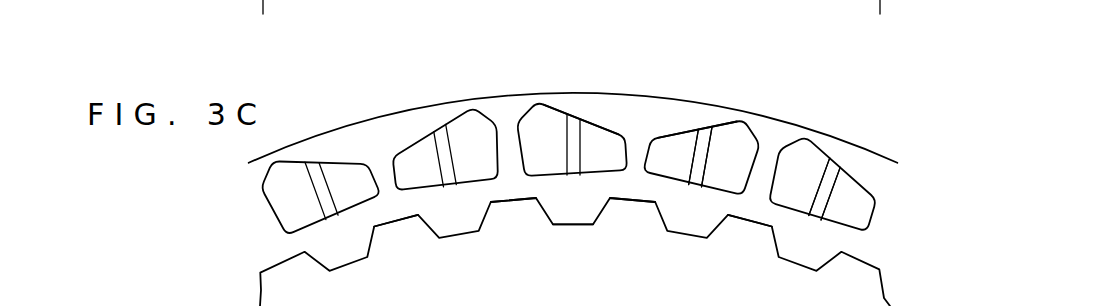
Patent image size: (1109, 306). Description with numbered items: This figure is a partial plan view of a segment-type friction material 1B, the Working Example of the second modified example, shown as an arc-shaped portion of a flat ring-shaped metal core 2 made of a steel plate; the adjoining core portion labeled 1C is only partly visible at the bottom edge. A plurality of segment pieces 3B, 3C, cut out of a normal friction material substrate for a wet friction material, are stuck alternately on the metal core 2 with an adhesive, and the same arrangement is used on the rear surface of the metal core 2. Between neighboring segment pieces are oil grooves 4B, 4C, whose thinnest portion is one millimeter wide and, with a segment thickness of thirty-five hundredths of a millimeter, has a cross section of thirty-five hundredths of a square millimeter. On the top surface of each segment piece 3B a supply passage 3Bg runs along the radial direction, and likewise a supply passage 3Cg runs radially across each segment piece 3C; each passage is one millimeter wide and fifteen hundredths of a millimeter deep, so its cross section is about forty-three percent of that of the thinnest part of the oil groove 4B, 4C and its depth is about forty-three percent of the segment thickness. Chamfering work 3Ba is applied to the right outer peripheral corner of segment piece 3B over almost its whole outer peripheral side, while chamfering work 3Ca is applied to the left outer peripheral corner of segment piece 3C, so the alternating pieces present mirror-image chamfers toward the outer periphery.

The segment-type friction material 1B is at (470, 85).
The stator core (adjacent) 1C is at (428, 300).
The metal core 2 is at (590, 213).
The segment piece 3B is at (295, 173).
The chamfering work 3Ba is at (600, 126).
The supply passage 3Bg is at (823, 207).
The segment piece 3C is at (428, 148).
The chamfering work 3Ca is at (683, 130).
The supply passage 3Cg is at (703, 163).
The oil groove 4B is at (387, 175).
The oil groove 4C is at (510, 147).